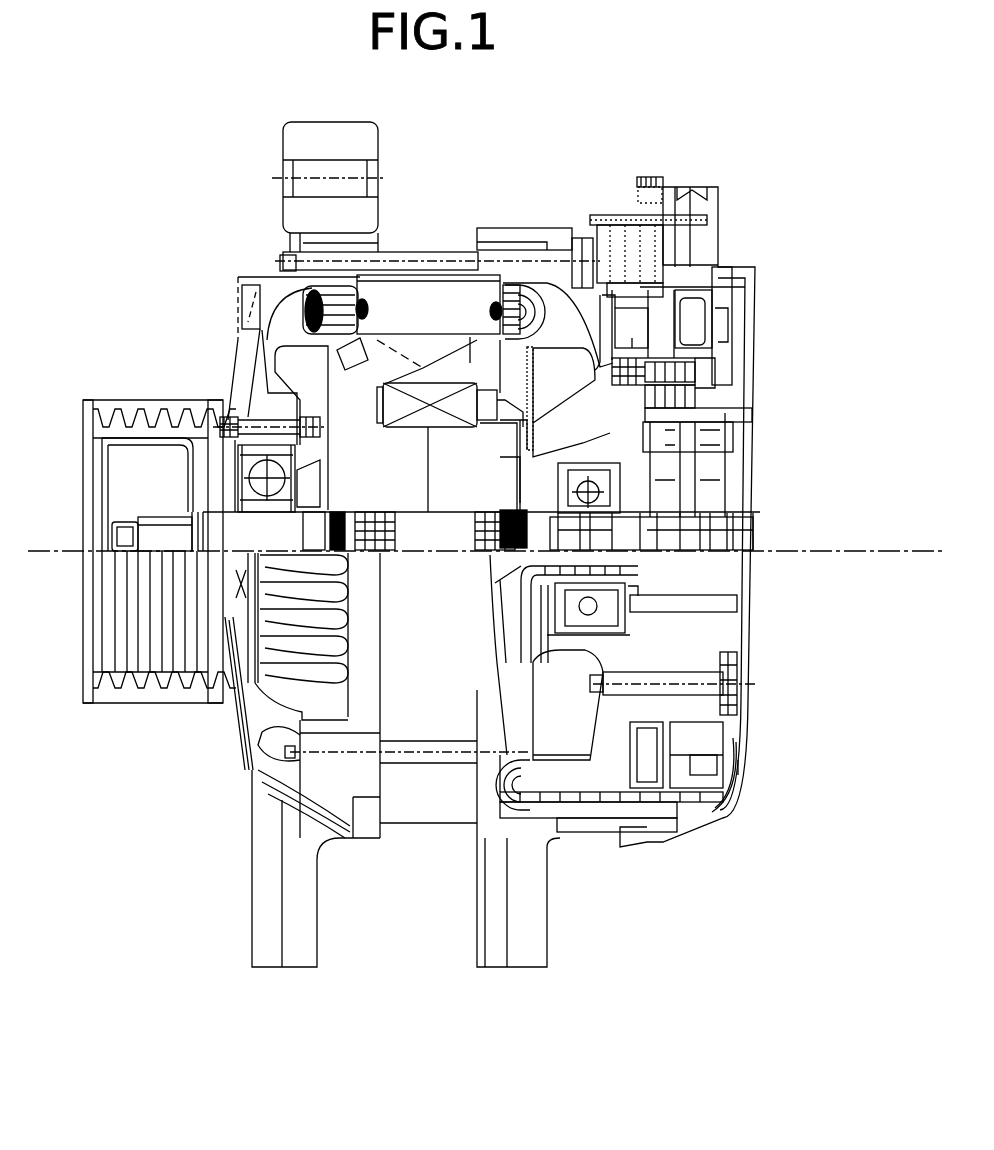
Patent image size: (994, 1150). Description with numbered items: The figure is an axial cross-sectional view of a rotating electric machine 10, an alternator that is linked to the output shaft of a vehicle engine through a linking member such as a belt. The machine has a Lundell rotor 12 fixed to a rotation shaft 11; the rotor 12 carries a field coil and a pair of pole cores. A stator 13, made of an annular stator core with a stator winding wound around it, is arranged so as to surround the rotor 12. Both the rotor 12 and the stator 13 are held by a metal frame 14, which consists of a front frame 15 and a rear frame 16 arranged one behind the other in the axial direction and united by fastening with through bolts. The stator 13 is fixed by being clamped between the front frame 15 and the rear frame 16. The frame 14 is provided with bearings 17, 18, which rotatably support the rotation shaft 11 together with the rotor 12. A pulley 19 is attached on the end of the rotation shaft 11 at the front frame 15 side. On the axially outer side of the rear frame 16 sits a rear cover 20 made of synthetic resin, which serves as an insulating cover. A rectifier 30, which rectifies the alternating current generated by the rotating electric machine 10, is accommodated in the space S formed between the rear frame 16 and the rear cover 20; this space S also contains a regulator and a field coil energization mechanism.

The rotating electric machine 10 is at (742, 150).
The rotation shaft 11 is at (212, 512).
The Lundell rotor 12 is at (447, 348).
The stator 13 is at (415, 290).
The frame 14 is at (240, 749).
The front frame 15 is at (240, 357).
The rear frame 16 is at (532, 230).
The bearing 17 is at (236, 415).
The bearing 18 is at (610, 450).
The pulley 19 is at (110, 398).
The rear cover 20 is at (747, 788).
The rectifier 30 is at (728, 797).
The space S is at (723, 750).